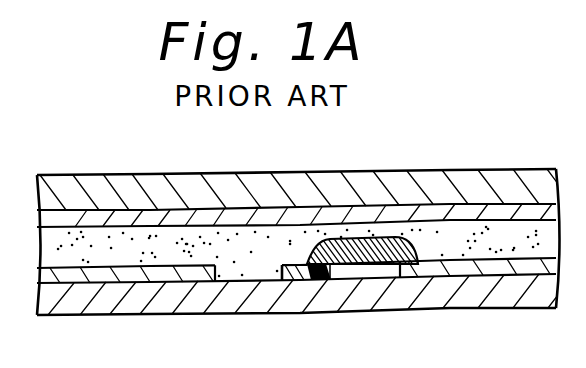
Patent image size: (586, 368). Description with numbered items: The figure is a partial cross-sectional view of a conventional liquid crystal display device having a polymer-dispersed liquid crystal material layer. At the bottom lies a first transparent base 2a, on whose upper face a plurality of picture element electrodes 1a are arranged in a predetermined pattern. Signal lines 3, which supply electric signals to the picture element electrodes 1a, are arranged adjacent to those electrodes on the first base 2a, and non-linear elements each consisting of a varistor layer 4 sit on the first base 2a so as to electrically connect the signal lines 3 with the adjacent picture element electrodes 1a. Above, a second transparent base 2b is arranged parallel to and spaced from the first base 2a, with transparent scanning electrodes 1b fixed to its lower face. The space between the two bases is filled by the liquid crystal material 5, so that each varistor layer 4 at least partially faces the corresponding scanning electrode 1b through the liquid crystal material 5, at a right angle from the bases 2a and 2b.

The second transparent base 2b is at (162, 184).
The transparent scanning electrode 1b is at (271, 214).
The liquid crystal material 5 is at (448, 234).
The picture element electrode 1a is at (163, 278).
The first transparent base 2a is at (107, 303).
The signal line 3 is at (307, 278).
The varistor layer 4 is at (367, 273).